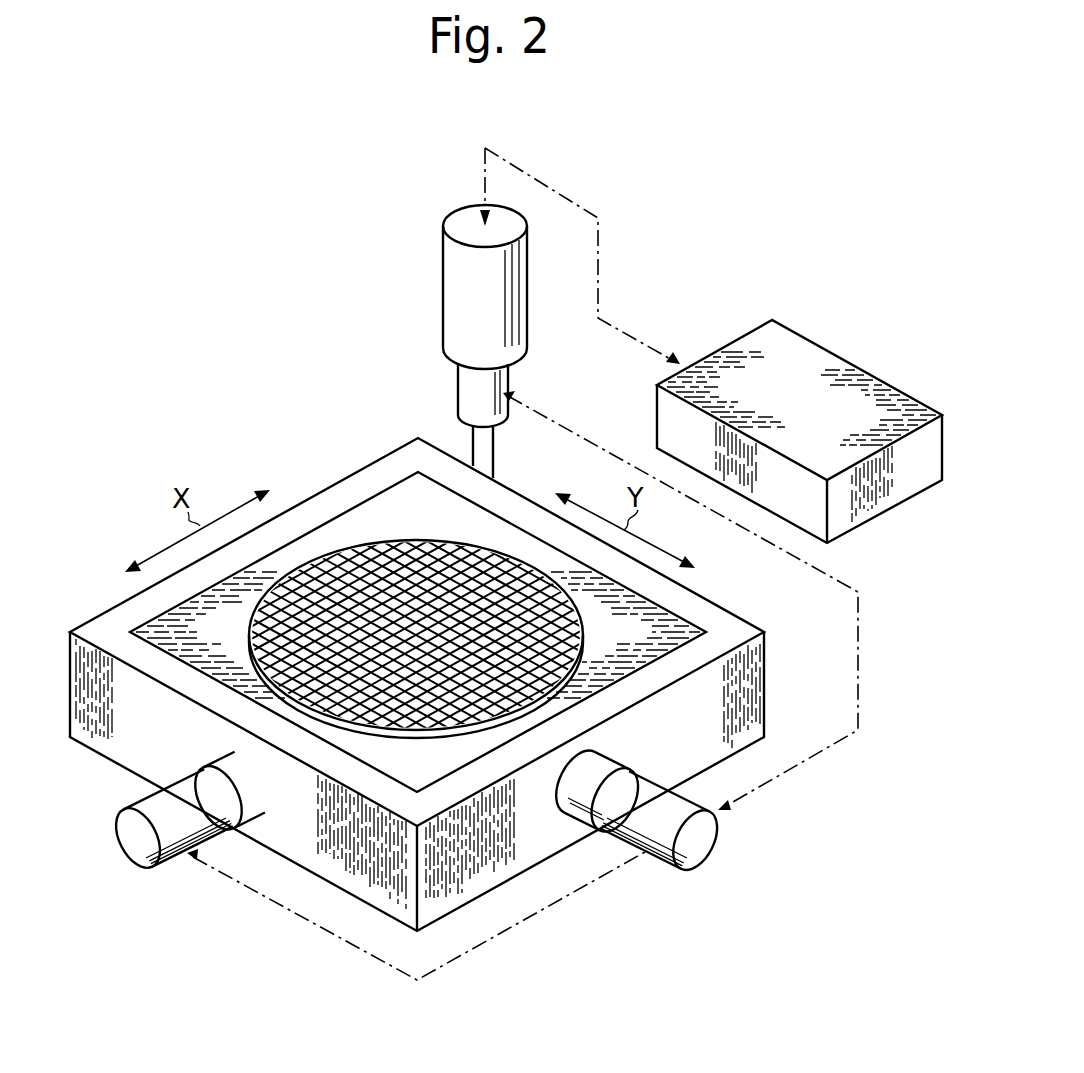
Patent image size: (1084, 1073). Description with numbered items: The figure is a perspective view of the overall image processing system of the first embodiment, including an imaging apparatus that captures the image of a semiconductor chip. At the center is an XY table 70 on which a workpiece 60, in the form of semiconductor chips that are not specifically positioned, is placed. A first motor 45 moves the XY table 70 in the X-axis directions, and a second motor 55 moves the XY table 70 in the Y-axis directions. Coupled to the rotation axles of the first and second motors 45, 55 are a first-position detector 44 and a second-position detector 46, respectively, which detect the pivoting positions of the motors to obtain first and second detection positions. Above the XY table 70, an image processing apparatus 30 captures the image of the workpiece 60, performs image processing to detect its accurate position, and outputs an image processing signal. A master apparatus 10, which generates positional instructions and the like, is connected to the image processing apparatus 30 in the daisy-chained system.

The master apparatus 10 is at (846, 362).
The image processing apparatus 30 is at (443, 295).
The first-position detector 44 is at (702, 843).
The first motor 45 is at (635, 765).
The second-position detector 46 is at (128, 846).
The second motor 55 is at (203, 763).
The workpiece 60 is at (381, 540).
The XY table 70 is at (319, 495).